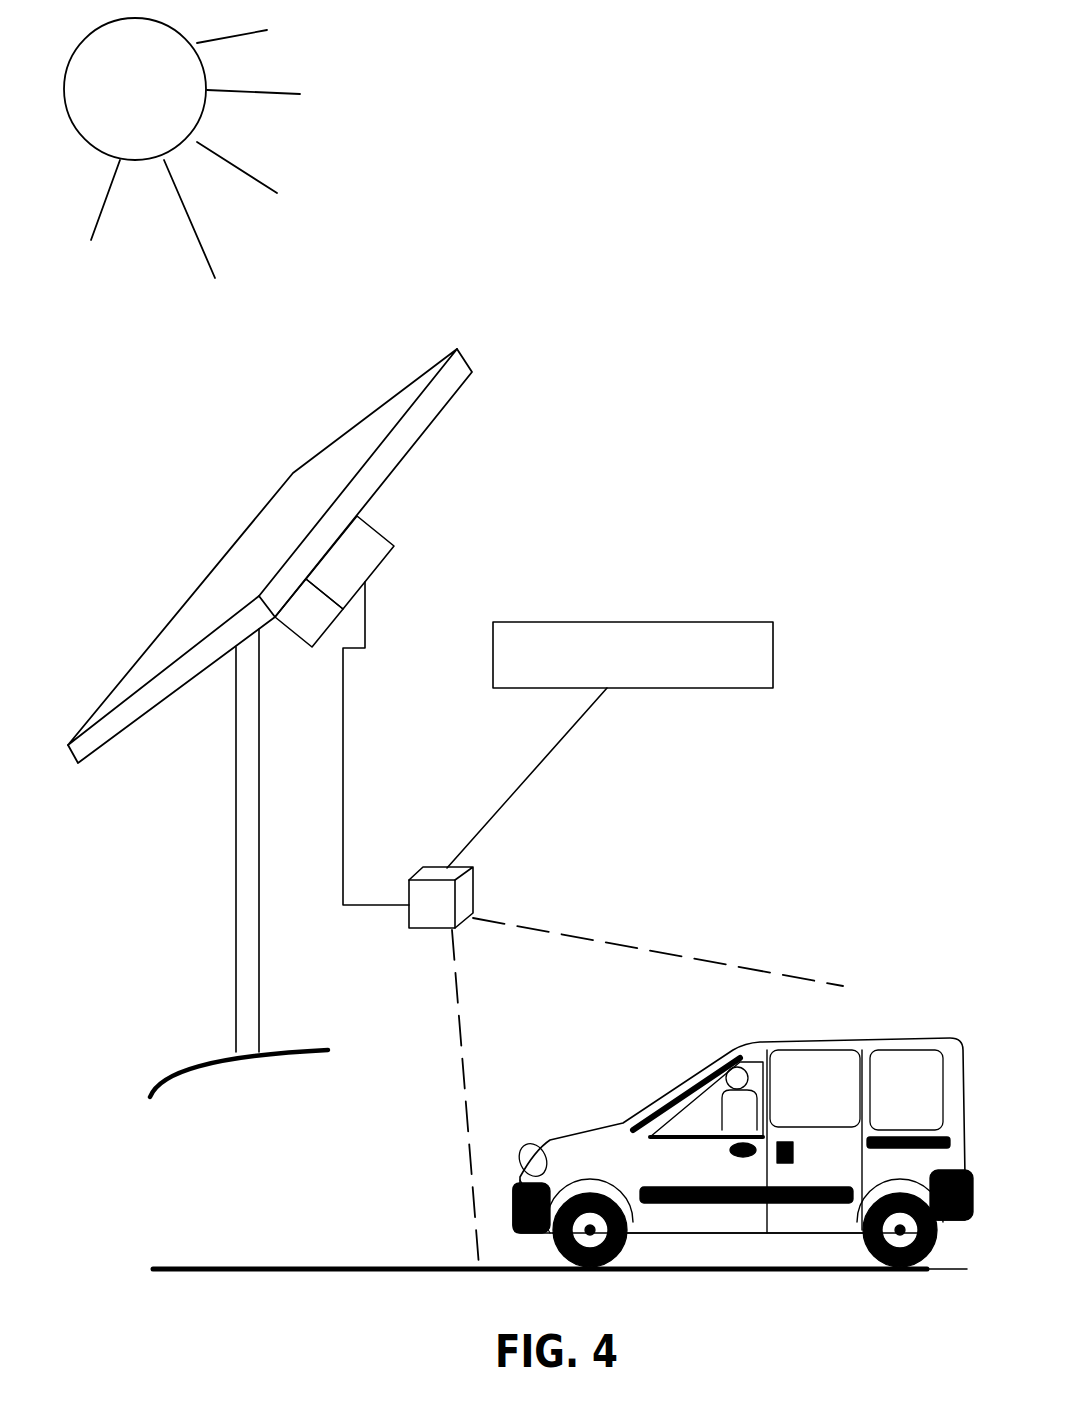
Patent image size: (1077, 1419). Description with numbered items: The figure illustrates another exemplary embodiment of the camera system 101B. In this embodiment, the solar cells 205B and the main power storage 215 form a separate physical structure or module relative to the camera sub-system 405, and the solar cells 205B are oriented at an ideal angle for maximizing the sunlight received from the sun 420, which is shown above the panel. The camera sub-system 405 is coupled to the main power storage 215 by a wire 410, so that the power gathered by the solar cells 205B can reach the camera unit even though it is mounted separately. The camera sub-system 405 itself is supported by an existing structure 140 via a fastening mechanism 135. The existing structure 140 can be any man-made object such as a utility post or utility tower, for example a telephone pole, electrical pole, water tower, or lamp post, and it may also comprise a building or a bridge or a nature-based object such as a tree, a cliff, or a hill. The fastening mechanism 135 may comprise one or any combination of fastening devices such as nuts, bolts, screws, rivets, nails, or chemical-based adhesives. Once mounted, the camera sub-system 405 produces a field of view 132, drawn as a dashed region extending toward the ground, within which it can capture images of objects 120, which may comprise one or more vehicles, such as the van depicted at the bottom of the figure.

The sun 420 is at (207, 73).
The camera system 101B is at (667, 333).
The solar cells 205B is at (465, 362).
The main power storage 215 is at (375, 538).
The wire 410 is at (343, 730).
The existing structure 140 is at (698, 622).
The fastening mechanism 135 is at (535, 772).
The camera sub-system 405 is at (467, 883).
The field of view 132 is at (573, 938).
The objects 120 is at (782, 1047).